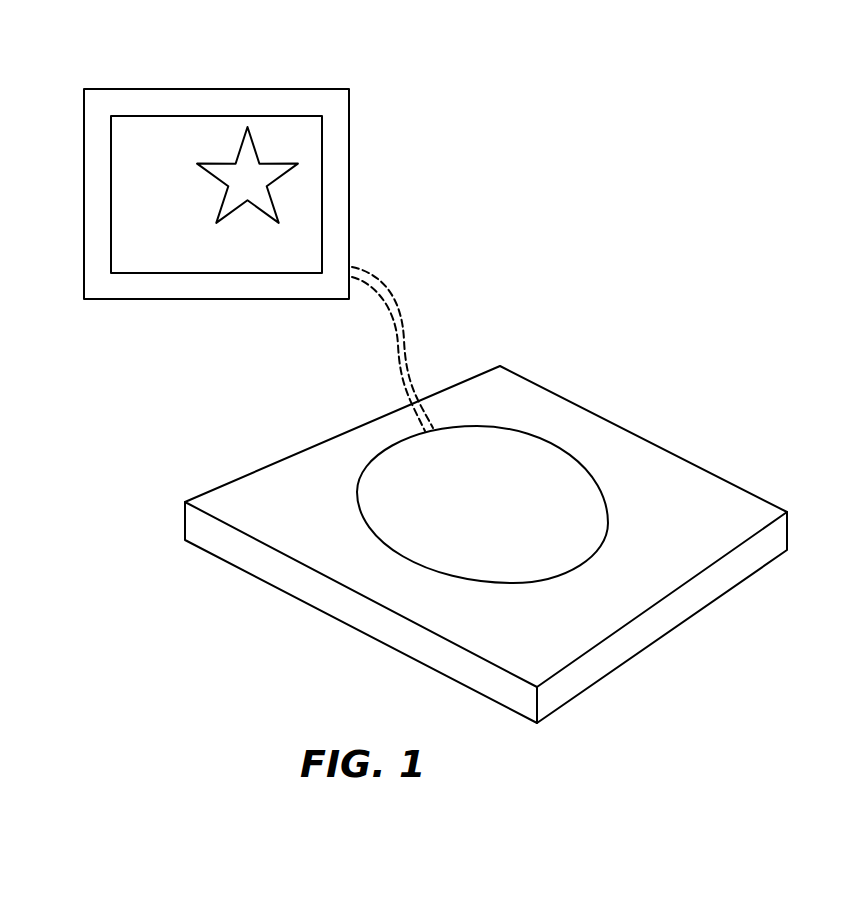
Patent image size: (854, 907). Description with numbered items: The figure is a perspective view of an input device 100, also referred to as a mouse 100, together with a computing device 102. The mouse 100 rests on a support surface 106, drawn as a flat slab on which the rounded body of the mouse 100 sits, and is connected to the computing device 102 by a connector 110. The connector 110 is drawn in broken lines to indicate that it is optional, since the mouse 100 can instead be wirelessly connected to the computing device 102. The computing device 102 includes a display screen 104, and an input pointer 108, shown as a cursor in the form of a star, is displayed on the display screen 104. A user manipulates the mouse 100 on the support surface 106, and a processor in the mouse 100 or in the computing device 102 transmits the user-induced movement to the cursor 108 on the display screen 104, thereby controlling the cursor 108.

The input device 100 is at (585, 503).
The computing device 102 is at (349, 195).
The display screen 104 is at (157, 135).
The support surface 106 is at (517, 392).
The input pointer 108 is at (248, 168).
The connector 110 is at (385, 287).